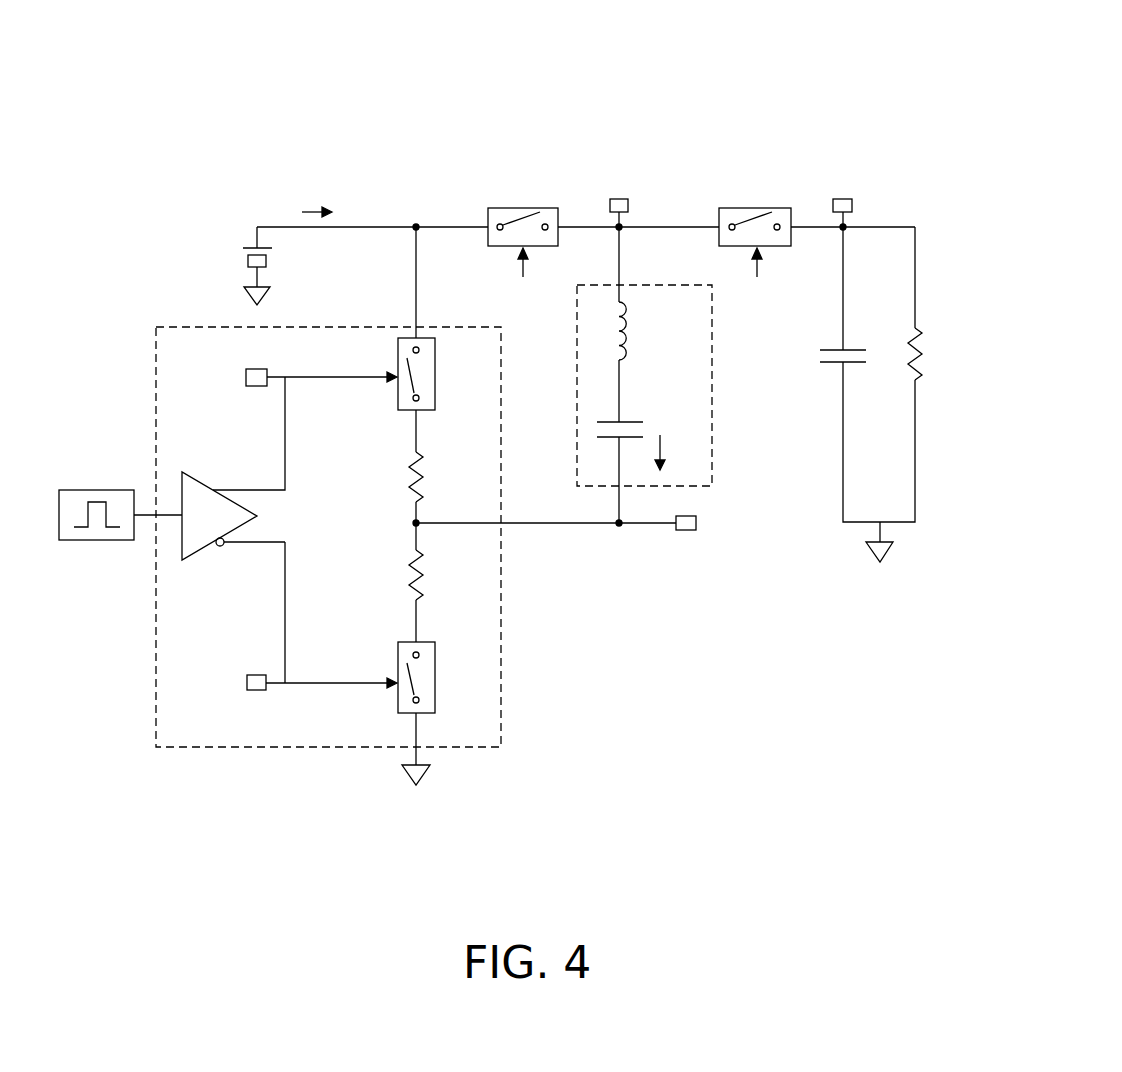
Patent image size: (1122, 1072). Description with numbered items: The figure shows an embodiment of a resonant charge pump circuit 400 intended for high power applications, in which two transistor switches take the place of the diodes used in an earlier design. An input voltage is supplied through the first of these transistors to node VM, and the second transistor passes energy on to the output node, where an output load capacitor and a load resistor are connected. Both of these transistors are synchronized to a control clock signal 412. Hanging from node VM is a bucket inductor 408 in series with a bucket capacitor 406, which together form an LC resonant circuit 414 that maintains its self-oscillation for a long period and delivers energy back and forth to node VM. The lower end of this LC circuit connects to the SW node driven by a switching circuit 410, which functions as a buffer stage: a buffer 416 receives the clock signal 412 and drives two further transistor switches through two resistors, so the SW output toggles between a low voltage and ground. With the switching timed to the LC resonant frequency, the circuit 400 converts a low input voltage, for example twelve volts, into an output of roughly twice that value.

The resonant charge pump circuit 400 is at (892, 70).
The bucket capacitor 406 is at (641, 422).
The bucket inductor 408 is at (625, 332).
The switching circuit 410 is at (150, 321).
The control clock signal 412 is at (103, 470).
The LC resonant circuit 414 is at (713, 397).
The buffer 416 is at (190, 476).